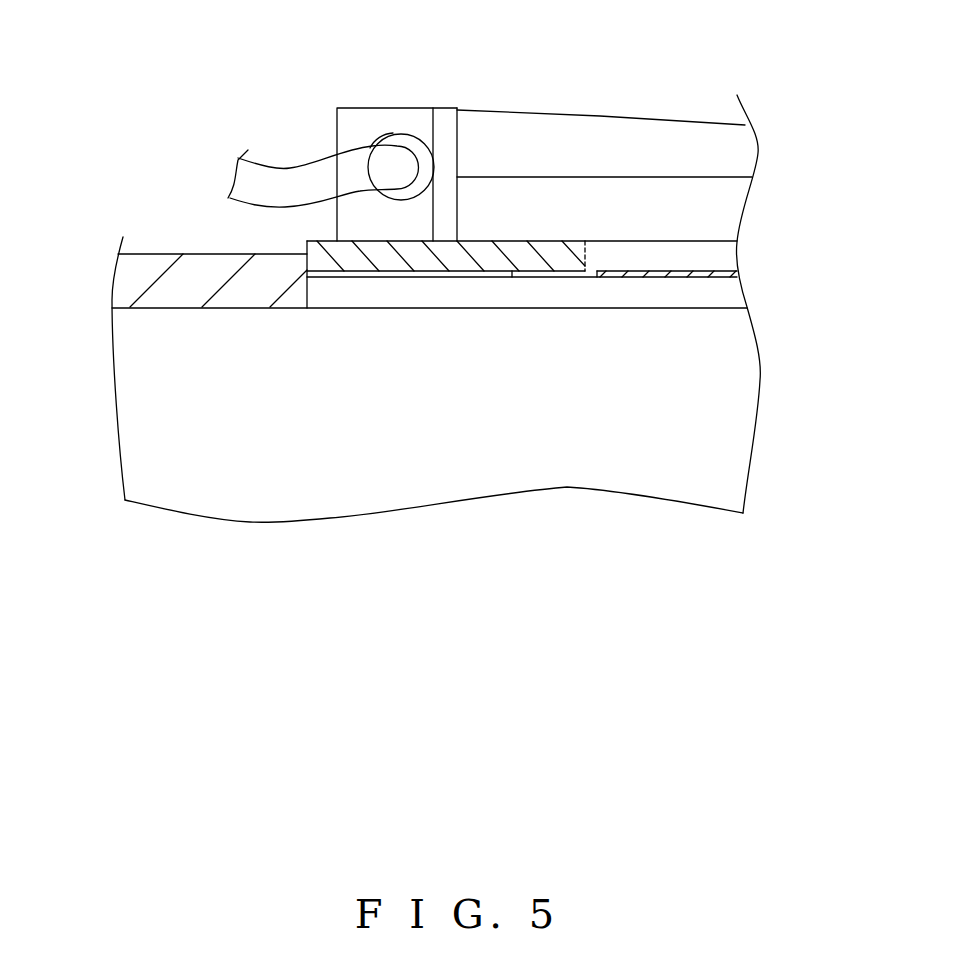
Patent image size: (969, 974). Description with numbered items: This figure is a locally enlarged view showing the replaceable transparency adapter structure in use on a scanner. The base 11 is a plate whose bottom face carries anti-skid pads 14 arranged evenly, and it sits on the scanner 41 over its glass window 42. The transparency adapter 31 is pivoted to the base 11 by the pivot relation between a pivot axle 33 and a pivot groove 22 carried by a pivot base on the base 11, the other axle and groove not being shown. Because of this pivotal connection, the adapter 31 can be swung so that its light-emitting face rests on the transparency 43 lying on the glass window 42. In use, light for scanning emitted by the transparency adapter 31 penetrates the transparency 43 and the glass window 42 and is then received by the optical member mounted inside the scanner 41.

The base 11 is at (555, 252).
The anti-skid pads 14 is at (480, 272).
The pivot groove 22 is at (430, 186).
The transparency adapter 31 is at (707, 187).
The pivot axle 33 is at (393, 131).
The scanner 41 is at (137, 382).
The glass window 42 is at (717, 296).
The transparency 43 is at (726, 271).